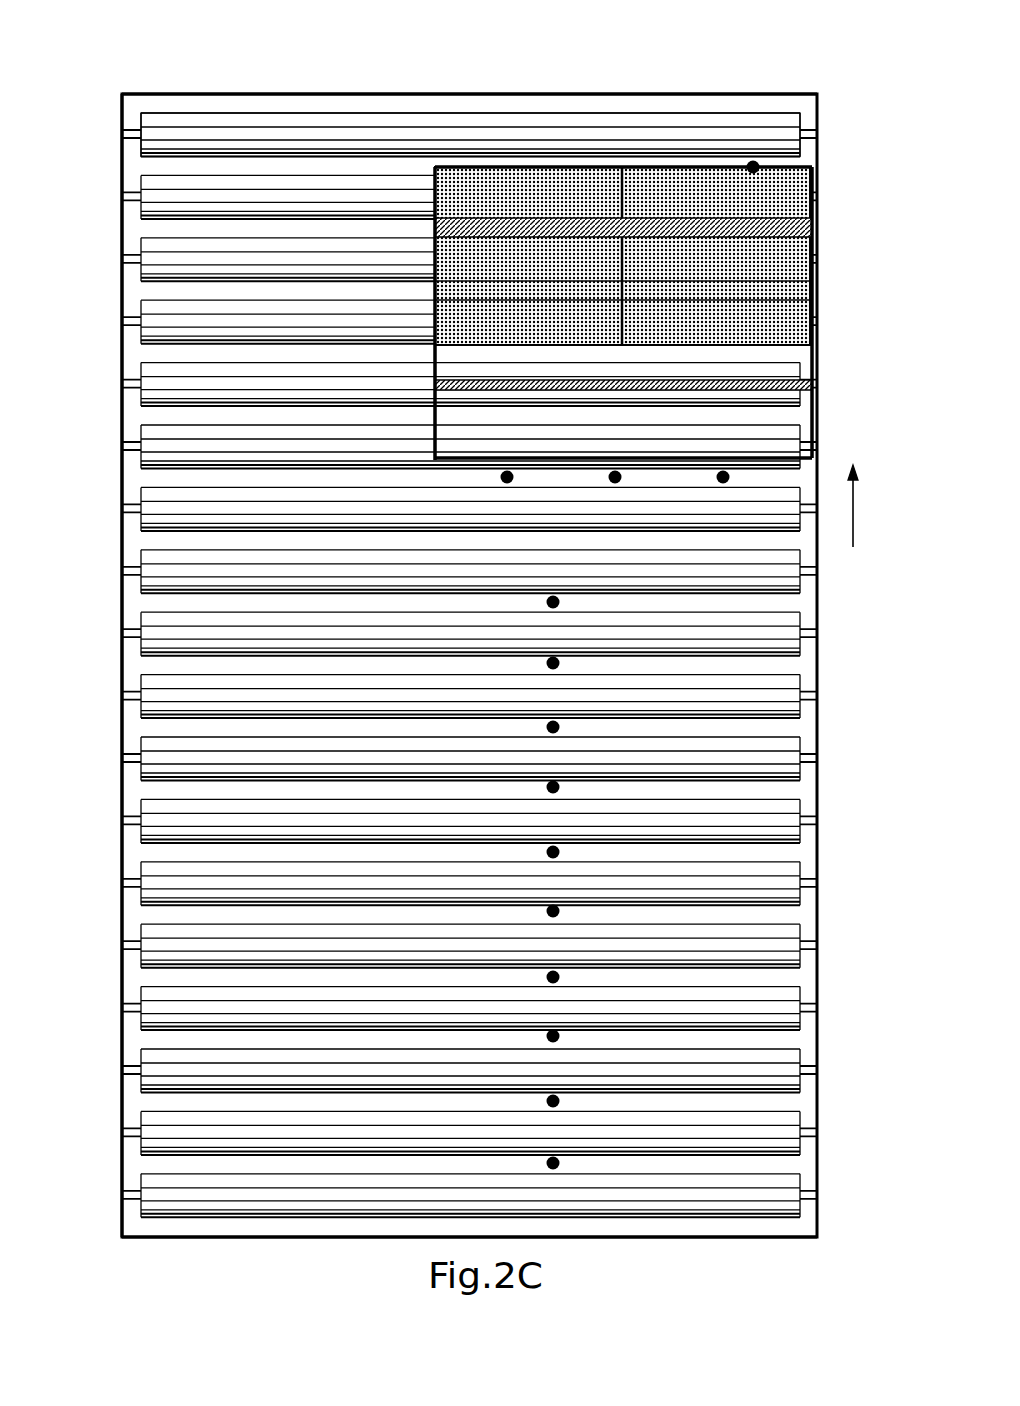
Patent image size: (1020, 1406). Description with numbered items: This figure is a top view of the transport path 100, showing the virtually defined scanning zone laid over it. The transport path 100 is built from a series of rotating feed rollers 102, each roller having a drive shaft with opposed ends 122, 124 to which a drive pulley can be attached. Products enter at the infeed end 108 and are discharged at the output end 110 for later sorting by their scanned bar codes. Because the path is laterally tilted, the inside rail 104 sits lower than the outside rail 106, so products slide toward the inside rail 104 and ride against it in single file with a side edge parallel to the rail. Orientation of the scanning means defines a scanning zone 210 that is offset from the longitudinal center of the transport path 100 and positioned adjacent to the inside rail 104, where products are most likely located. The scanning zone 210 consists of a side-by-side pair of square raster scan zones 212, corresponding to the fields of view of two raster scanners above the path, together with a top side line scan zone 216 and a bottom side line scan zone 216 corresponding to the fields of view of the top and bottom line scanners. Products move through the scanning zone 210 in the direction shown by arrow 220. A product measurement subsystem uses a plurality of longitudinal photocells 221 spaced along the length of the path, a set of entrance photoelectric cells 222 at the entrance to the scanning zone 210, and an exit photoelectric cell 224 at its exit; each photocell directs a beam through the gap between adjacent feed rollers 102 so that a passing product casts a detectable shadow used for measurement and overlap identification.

The transport path 100 is at (347, 1238).
The feed roller 102 is at (228, 130).
The inside rail 104 is at (823, 417).
The outside rail 106 is at (122, 392).
The infeed end 108 is at (219, 1238).
The output end 110 is at (388, 93).
The drive shaft end 122 is at (126, 562).
The drive shaft end 124 is at (810, 574).
The scanning zone 210 is at (682, 120).
The square raster scan zone 212 is at (458, 184).
The line scan zone 216 is at (801, 232).
The arrow 220 is at (853, 517).
The longitudinal photocell 221 is at (548, 602).
The entrance photoelectric cell 222 is at (507, 484).
The exit photoelectric cell 224 is at (754, 160).